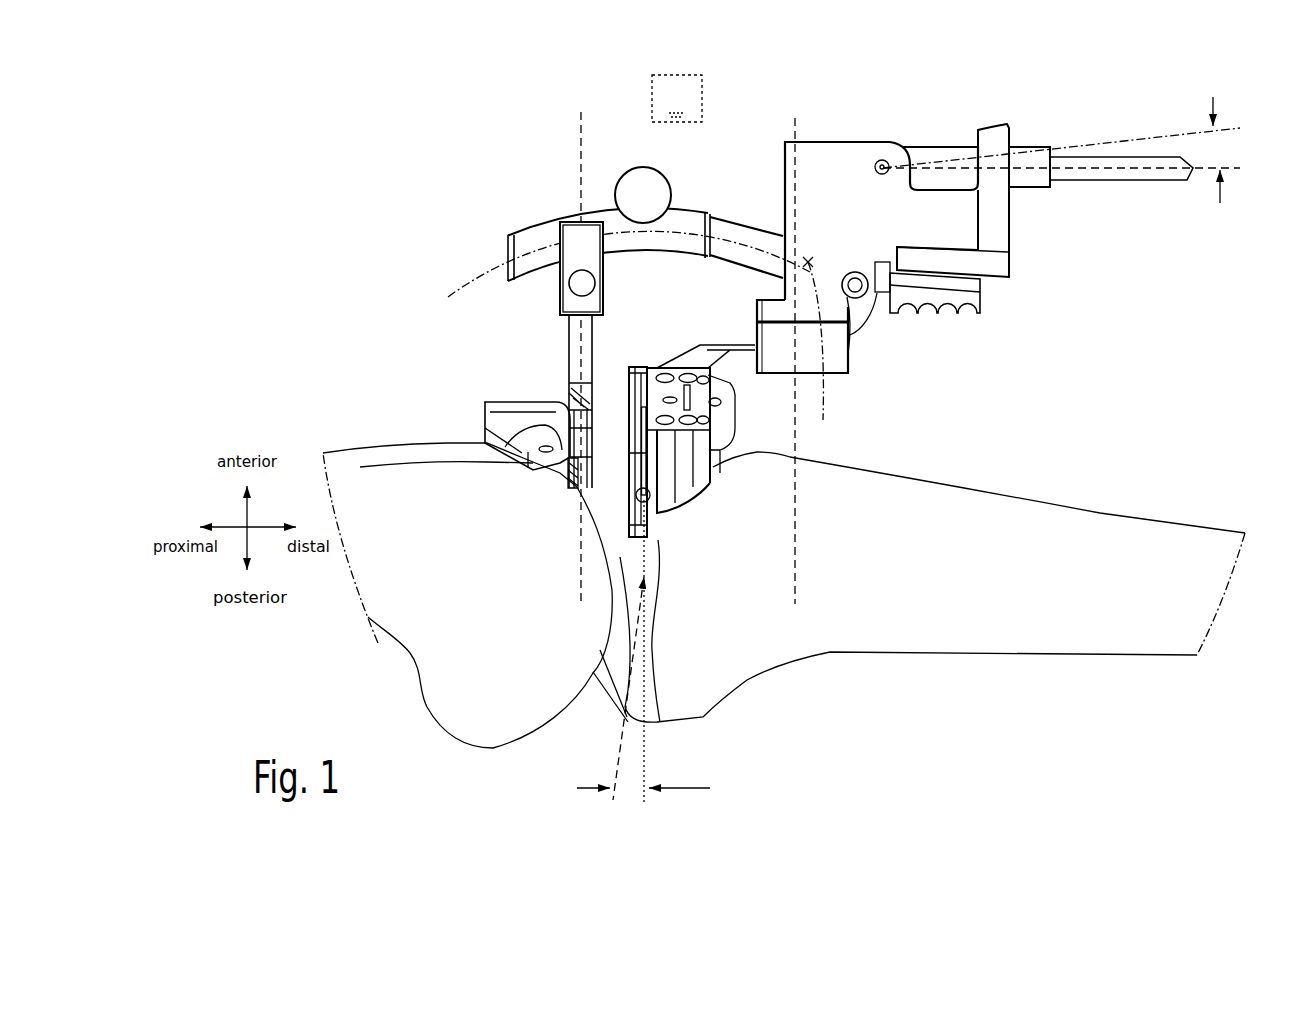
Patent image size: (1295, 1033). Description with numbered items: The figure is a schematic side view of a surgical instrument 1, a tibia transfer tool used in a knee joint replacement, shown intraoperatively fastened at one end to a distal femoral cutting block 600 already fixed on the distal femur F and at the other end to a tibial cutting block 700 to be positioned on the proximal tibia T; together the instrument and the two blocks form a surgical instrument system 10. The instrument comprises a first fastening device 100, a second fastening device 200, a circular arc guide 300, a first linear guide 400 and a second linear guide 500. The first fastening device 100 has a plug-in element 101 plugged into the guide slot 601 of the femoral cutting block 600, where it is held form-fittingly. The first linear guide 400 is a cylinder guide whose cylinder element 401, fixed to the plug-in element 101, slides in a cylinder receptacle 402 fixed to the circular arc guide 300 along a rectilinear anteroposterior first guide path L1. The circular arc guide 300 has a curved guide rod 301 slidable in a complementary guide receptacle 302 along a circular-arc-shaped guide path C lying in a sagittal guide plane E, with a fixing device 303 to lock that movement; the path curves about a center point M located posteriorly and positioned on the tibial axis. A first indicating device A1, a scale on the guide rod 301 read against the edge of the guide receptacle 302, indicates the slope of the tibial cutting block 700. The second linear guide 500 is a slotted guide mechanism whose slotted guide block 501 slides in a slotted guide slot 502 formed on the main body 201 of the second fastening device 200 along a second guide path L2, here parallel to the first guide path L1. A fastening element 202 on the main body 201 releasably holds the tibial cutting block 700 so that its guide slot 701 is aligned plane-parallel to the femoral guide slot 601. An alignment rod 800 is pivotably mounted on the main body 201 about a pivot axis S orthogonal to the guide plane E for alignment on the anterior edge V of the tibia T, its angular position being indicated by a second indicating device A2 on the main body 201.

The surgical instrument 1 is at (817, 117).
The surgical instrument system 10 is at (480, 190).
The first fastening device 100 is at (549, 409).
The plug-in element 101 is at (587, 410).
The second fastening device 200 is at (1040, 250).
The main body 201 is at (997, 223).
The fastening element 202 is at (955, 317).
The circular arc guide 300 is at (643, 195).
The guide rod 301 is at (763, 245).
The guide receptacle 302 is at (545, 230).
The fixing device 303 is at (627, 190).
The first linear guide 400 is at (491, 355).
The cylinder element 401 is at (550, 401).
The cylinder receptacle 402 is at (563, 273).
The second linear guide 500 is at (753, 203).
The slotted guide block 501 is at (826, 351).
The slotted guide slot 502 is at (785, 150).
The distal femoral cutting block 600 is at (485, 405).
The guide slot 601 is at (572, 482).
The tibial cutting block 700 is at (682, 483).
The guide slot 701 is at (660, 722).
The alignment rod 800 is at (1120, 163).
The first indicating device A1 is at (719, 235).
The second indicating device A2 is at (1017, 128).
The guide path C is at (477, 280).
The guide plane E is at (677, 98).
The pivot axis S is at (885, 160).
The first guide path L1 is at (580, 583).
The second guide path L2 is at (796, 516).
The femur F is at (407, 622).
The tibia T is at (950, 623).
The center point M is at (607, 657).
The anterior edge V is at (1143, 515).